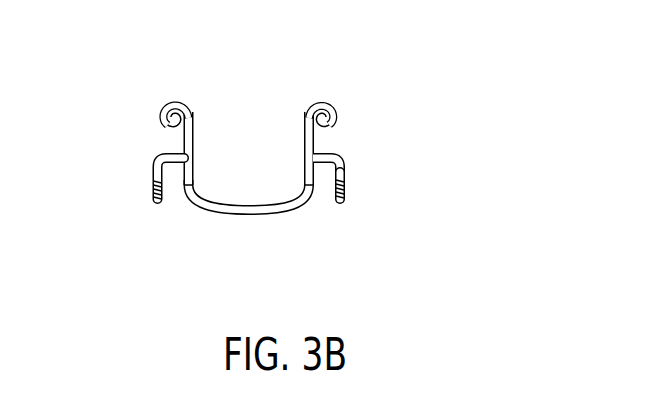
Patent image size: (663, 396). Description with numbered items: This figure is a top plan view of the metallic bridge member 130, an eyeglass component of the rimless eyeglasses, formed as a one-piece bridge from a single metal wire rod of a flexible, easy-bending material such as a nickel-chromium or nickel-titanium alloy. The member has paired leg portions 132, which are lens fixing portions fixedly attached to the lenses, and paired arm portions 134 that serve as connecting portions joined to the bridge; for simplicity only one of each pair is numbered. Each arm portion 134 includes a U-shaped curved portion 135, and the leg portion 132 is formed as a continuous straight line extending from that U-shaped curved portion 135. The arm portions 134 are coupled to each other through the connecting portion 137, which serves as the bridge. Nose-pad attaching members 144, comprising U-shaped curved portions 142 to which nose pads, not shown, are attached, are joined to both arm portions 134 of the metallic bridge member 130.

The metallic bridge member 130 is at (253, 162).
The leg portion 132 is at (345, 187).
The arm portion 134 is at (336, 132).
The U-shaped curved portion 135 is at (336, 153).
The connecting portion 137 is at (253, 214).
The U-shaped curved portion 142 is at (320, 106).
The nose-pad attaching member 144 is at (203, 124).